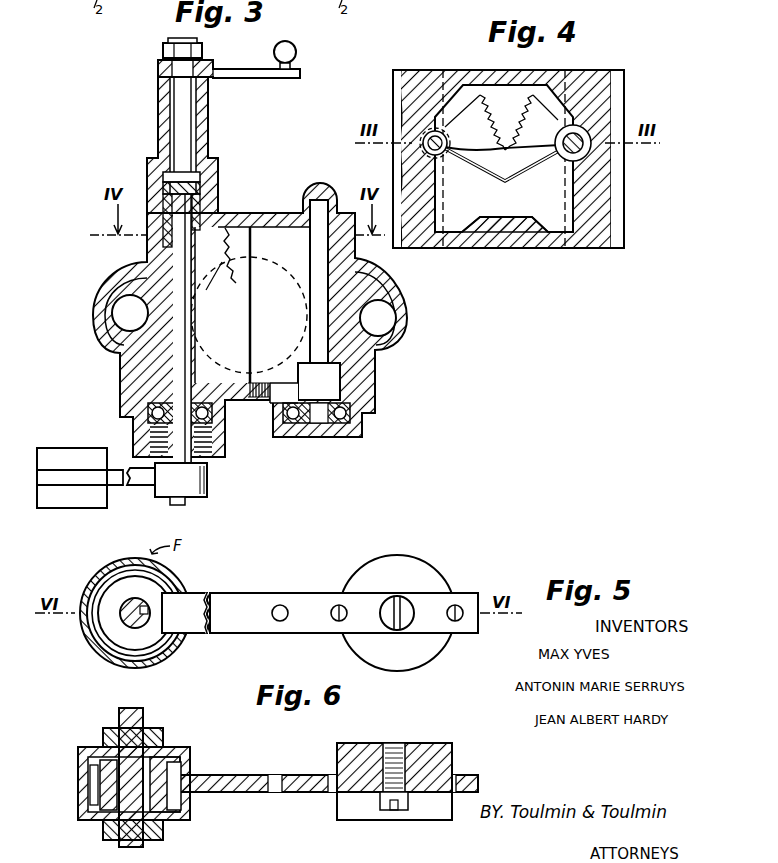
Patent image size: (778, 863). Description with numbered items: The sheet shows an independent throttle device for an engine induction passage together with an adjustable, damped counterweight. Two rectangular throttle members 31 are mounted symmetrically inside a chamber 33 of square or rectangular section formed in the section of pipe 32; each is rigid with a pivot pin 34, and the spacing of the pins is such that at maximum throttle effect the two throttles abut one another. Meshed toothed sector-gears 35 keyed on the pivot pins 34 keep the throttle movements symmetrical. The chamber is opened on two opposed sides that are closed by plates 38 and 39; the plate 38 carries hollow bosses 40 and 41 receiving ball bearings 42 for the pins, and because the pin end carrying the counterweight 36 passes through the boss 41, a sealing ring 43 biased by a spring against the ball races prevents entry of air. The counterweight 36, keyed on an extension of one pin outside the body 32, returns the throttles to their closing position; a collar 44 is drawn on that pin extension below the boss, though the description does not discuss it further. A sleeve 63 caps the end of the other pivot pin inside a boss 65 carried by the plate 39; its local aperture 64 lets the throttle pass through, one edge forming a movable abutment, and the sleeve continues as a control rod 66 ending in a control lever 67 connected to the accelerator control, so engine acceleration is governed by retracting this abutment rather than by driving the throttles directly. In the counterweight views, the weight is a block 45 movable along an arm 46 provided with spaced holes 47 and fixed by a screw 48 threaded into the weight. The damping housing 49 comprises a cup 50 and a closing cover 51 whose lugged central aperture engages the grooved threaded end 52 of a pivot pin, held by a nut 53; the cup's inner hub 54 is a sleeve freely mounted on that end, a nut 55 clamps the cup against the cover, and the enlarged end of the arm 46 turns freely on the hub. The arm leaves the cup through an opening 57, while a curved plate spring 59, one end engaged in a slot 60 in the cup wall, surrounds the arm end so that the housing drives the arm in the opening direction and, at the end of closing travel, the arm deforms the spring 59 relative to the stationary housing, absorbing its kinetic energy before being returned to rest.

In FIG. 3, the throttle members 31 is at (282, 258).
In FIG. 4, the throttle members 31 is at (478, 170).
In FIG. 3, the section of pipe 32 is at (360, 370).
In FIG. 4, the section of pipe 32 is at (600, 200).
In FIG. 3, the chamber 33 is at (240, 250).
In FIG. 4, the chamber 33 is at (558, 222).
In FIG. 3, the pivot pins 34 is at (178, 255).
In FIG. 4, the pivot pins 34 is at (586, 128).
In FIG. 3, the sector-gears 35 is at (272, 397).
In FIG. 4, the sector-gears 35 is at (463, 118).
In FIG. 3, the counterweight 36 is at (68, 510).
In FIG. 3, the plate 38 is at (240, 400).
In FIG. 3, the plate 39 is at (228, 213).
In FIG. 3, the hollow boss 40 is at (318, 436).
In FIG. 3, the hollow boss 41 is at (232, 446).
In FIG. 3, the ball bearings 42 is at (150, 405).
In FIG. 3, the sealing ring and spring 43 is at (150, 430).
In FIG. 3, the collar 44 is at (162, 453).
In FIG. 5, the block 45 is at (412, 666).
In FIG. 6, the block 45 is at (418, 752).
In FIG. 5, the arm 46 is at (222, 602).
In FIG. 6, the arm 46 is at (250, 792).
In FIG. 5, the holes 47 is at (332, 607).
In FIG. 6, the holes 47 is at (290, 775).
In FIG. 5, the screw 48 is at (388, 620).
In FIG. 6, the screw 48 is at (392, 809).
In FIG. 6, the housing 49 is at (72, 787).
In FIG. 5, the cup 50 is at (122, 565).
In FIG. 6, the cup 50 is at (78, 765).
In FIG. 6, the closing cover 51 is at (92, 758).
In FIG. 5, the end of the pivot pin 52 is at (120, 592).
In FIG. 6, the end of the pivot pin 52 is at (136, 716).
In FIG. 6, the nut 53 is at (108, 732).
In FIG. 6, the inner hub 54 is at (170, 752).
In FIG. 6, the nut 55 is at (165, 832).
In FIG. 6, the opening 57 is at (186, 770).
In FIG. 5, the curved plate spring 59 is at (92, 633).
In FIG. 6, the curved plate spring 59 is at (86, 795).
In FIG. 5, the slot or recess 60 is at (176, 580).
In FIG. 3, the sleeve 63 is at (196, 182).
In FIG. 4, the sleeve 63 is at (580, 135).
In FIG. 4, the local aperture 64 is at (552, 135).
In FIG. 3, the boss 65 is at (152, 168).
In FIG. 3, the control rod 66 is at (180, 95).
In FIG. 3, the control lever 67 is at (253, 76).